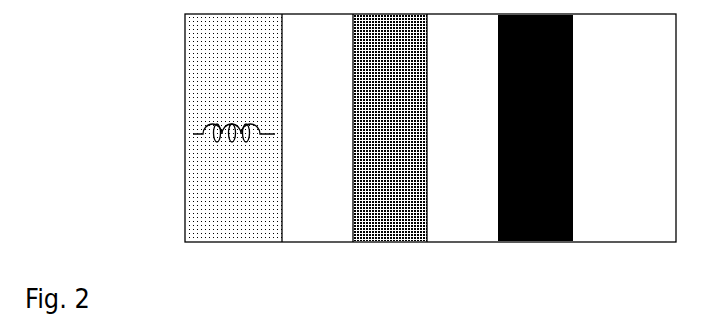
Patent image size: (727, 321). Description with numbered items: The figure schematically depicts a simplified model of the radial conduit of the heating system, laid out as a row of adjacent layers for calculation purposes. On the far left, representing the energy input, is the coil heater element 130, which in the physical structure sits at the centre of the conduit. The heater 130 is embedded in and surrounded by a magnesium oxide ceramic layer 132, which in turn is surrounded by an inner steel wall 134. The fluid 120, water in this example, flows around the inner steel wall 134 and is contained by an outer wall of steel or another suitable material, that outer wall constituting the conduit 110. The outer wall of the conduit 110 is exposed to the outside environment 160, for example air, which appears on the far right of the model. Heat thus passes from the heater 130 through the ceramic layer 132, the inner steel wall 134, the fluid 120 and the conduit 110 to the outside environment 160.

The coil heater element 130 is at (237, 218).
The magnesium oxide ceramic layer 132 is at (315, 215).
The inner steel wall 134 is at (383, 217).
The fluid 120 is at (455, 215).
The conduit 110 is at (522, 215).
The outside environment 160 is at (618, 215).